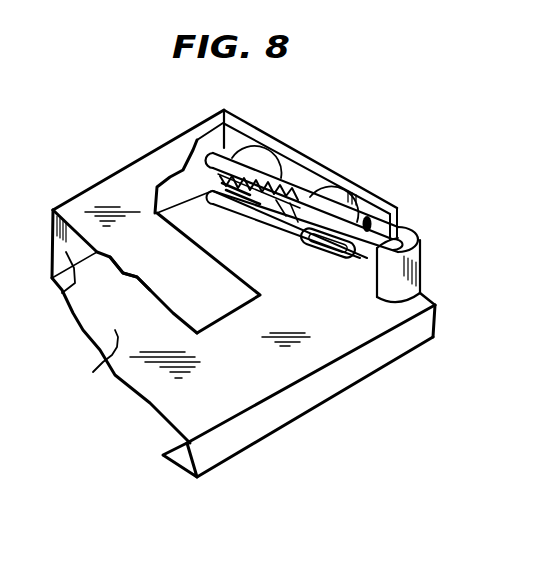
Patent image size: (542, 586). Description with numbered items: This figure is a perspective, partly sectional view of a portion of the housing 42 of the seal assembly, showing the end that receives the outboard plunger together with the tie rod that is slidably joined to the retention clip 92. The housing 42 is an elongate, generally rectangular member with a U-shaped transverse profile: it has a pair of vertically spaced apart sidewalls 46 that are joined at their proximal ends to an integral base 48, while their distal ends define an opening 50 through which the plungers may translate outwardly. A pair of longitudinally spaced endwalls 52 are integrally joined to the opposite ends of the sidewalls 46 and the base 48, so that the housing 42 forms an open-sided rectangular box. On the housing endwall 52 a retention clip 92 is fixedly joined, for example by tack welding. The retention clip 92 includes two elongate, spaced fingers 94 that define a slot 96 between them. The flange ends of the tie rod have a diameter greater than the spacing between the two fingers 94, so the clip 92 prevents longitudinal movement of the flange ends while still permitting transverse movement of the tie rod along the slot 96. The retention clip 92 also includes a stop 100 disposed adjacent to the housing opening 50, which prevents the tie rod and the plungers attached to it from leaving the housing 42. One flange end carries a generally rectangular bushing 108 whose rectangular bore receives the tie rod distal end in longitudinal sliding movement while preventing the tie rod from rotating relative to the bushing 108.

The stop 100 is at (0, 36).
The housing 42 is at (128, 163).
The sidewalls 46 is at (158, 274).
The base 48 is at (62, 293).
The opening 50 is at (227, 320).
The endwalls 52 is at (288, 162).
The retention clip 92 is at (392, 280).
The fingers 94 is at (258, 218).
The slot 96 is at (298, 210).
The bushing 108 is at (301, 262).